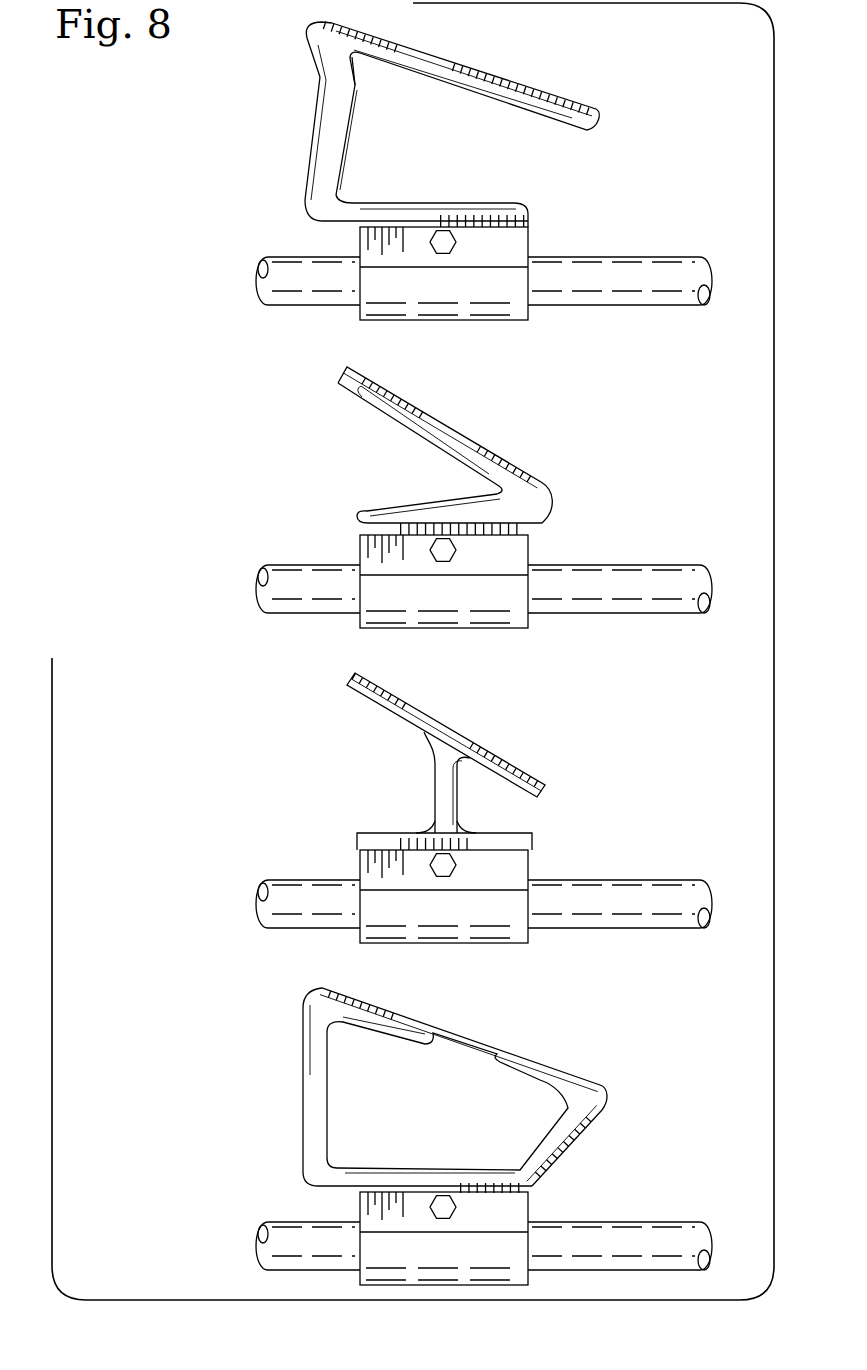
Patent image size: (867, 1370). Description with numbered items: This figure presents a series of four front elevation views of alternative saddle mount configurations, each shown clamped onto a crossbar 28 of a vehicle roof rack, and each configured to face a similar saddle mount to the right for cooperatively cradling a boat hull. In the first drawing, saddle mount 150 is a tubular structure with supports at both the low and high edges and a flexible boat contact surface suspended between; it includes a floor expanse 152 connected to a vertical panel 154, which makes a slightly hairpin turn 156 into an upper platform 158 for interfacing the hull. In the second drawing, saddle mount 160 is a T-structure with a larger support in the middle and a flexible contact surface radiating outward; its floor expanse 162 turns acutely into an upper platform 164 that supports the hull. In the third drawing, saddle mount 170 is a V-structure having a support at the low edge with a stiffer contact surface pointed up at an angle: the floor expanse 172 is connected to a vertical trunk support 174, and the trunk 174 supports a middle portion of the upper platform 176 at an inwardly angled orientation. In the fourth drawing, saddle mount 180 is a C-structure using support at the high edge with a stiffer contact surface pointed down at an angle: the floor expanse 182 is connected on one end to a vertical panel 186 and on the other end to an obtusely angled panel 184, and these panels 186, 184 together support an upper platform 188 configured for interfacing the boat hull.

The crossbar 28 is at (623, 270).
The saddle mount 150 is at (452, 124).
The floor expanse 152 is at (440, 203).
The vertical panel 154 is at (355, 118).
The hairpin turn 156 is at (312, 25).
The upper platform 158 is at (452, 70).
The saddle mount 160 is at (471, 448).
The floor expanse 162 is at (420, 503).
The upper platform 164 is at (420, 408).
The saddle mount 170 is at (445, 761).
The floor expanse 172 is at (380, 833).
The vertical trunk support 174 is at (435, 790).
The upper platform 176 is at (395, 700).
The saddle mount 180 is at (447, 1086).
The floor expanse 182 is at (388, 1168).
The obtusely angled panel 184 is at (588, 1120).
The vertical panel 186 is at (302, 1095).
The upper platform 188 is at (452, 1032).